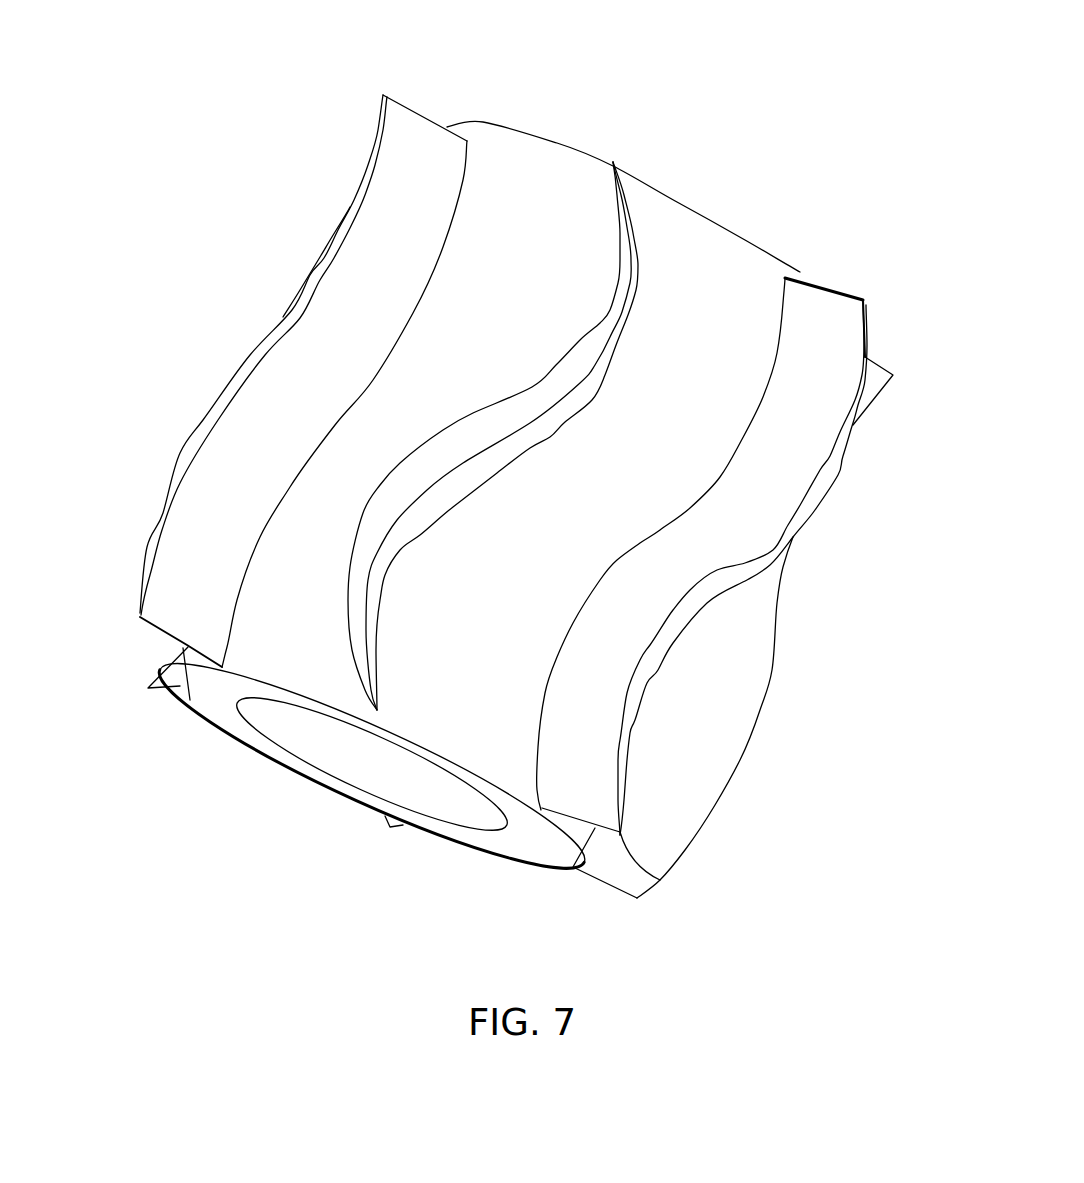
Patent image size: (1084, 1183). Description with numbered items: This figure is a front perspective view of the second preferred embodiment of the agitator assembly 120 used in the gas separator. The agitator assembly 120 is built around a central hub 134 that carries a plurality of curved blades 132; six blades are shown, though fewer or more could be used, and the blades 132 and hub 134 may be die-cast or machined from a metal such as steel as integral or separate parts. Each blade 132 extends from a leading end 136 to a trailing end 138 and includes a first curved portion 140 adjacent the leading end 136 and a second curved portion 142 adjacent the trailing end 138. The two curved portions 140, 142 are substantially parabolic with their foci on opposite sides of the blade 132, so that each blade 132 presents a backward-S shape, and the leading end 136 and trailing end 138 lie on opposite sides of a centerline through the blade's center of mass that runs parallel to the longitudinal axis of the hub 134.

The agitator assembly 120 is at (182, 139).
The blade 132 is at (285, 306).
The central hub 134 is at (540, 157).
The leading end 136 is at (187, 646).
The trailing end 138 is at (423, 117).
The first curved portion 140 is at (203, 505).
The second curved portion 142 is at (393, 205).